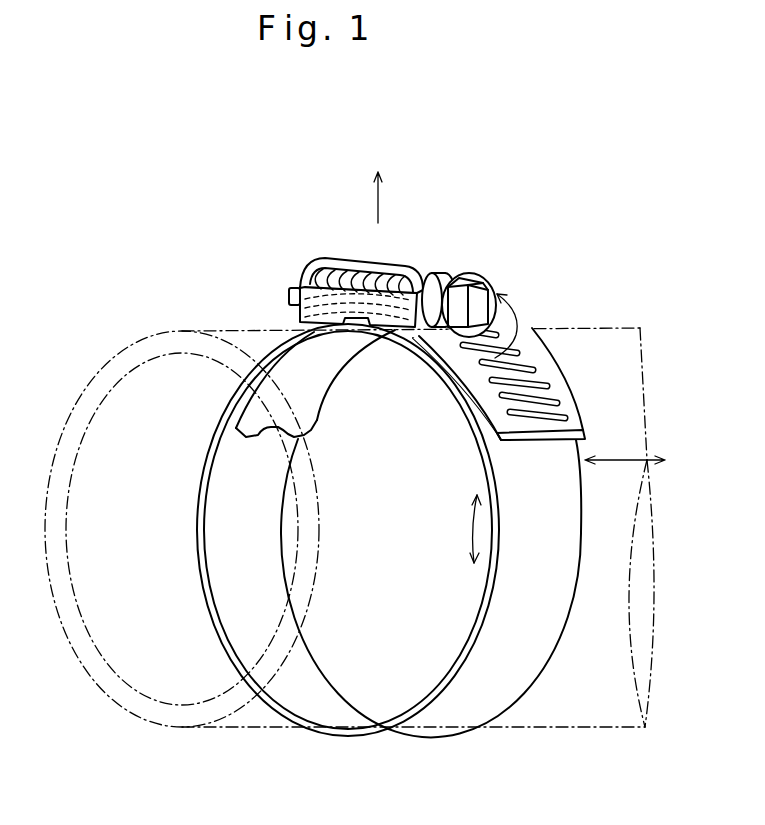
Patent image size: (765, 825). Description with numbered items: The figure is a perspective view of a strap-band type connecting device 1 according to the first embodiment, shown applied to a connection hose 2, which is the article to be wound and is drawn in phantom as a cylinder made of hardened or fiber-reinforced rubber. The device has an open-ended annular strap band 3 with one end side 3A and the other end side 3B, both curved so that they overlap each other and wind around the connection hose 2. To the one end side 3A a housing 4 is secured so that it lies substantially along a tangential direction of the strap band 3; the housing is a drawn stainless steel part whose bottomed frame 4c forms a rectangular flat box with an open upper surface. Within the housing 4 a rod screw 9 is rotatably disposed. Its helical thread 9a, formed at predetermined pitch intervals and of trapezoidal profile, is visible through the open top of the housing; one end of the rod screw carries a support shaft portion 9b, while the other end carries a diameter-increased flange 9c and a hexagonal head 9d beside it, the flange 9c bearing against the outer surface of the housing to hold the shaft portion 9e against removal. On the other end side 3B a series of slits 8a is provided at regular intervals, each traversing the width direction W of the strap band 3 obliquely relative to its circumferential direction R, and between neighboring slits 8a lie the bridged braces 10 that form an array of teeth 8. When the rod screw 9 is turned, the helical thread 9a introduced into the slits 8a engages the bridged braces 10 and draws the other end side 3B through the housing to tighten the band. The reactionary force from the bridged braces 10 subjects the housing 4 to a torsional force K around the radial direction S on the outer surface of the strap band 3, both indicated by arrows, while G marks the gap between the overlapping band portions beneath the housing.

The strap-band type connecting device 1 is at (396, 236).
The connection hose 2 is at (117, 353).
The strap band 3 is at (247, 338).
The one end side 3A is at (478, 400).
The other end side 3B is at (310, 400).
The housing 4 is at (335, 268).
The bottomed frame 4c is at (312, 297).
The array of teeth 8 is at (504, 430).
The slits 8a is at (540, 418).
The rod screw 9 is at (385, 256).
The helical thread 9a is at (367, 277).
The support shaft portion 9b is at (298, 287).
The flange 9c is at (489, 280).
The hexagonal head 9d is at (482, 300).
The shaft portion 9e is at (432, 287).
The bridged brace 10 is at (513, 390).
The gap G is at (357, 330).
The torsional force K is at (513, 326).
The circumferential direction R is at (466, 529).
The radial direction S is at (378, 182).
The width direction W is at (625, 445).